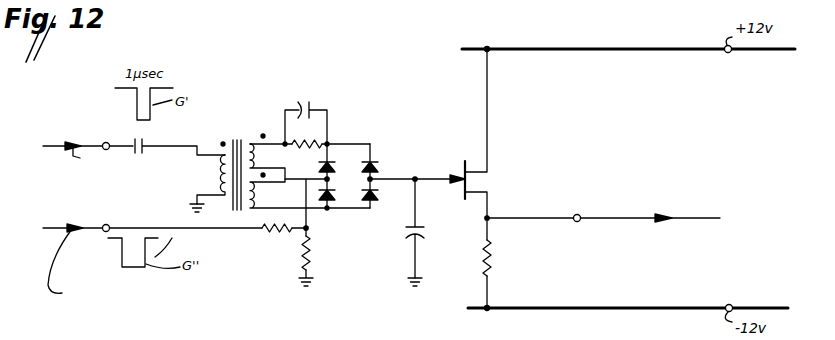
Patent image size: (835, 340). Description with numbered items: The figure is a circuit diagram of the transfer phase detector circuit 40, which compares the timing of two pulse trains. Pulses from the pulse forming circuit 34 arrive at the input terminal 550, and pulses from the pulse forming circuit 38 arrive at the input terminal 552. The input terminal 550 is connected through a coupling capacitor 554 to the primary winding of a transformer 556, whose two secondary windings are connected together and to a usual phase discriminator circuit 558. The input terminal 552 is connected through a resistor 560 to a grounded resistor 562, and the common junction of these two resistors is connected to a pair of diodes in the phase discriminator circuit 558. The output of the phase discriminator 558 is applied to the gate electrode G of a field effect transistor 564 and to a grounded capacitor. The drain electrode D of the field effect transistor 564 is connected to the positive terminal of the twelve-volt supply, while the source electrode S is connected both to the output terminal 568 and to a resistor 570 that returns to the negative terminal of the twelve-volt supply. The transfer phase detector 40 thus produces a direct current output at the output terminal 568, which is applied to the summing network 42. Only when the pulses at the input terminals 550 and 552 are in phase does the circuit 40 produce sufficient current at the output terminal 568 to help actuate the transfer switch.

The input terminal 550 is at (102, 145).
The input terminal 552 is at (104, 232).
The coupling capacitor 554 is at (146, 143).
The transformer 556 is at (230, 133).
The phase discriminator circuit 558 is at (350, 153).
The resistor 560 is at (285, 236).
The grounded resistor 562 is at (312, 250).
The field effect transistor 564 is at (465, 165).
The output terminal 568 is at (575, 223).
The resistor 570 is at (484, 250).
The pulse forming circuit 34 is at (107, 172).
The pulse forming circuit 38 is at (133, 284).
The transfer phase detector circuit 40 is at (305, 20).
The summing network 42 is at (762, 217).